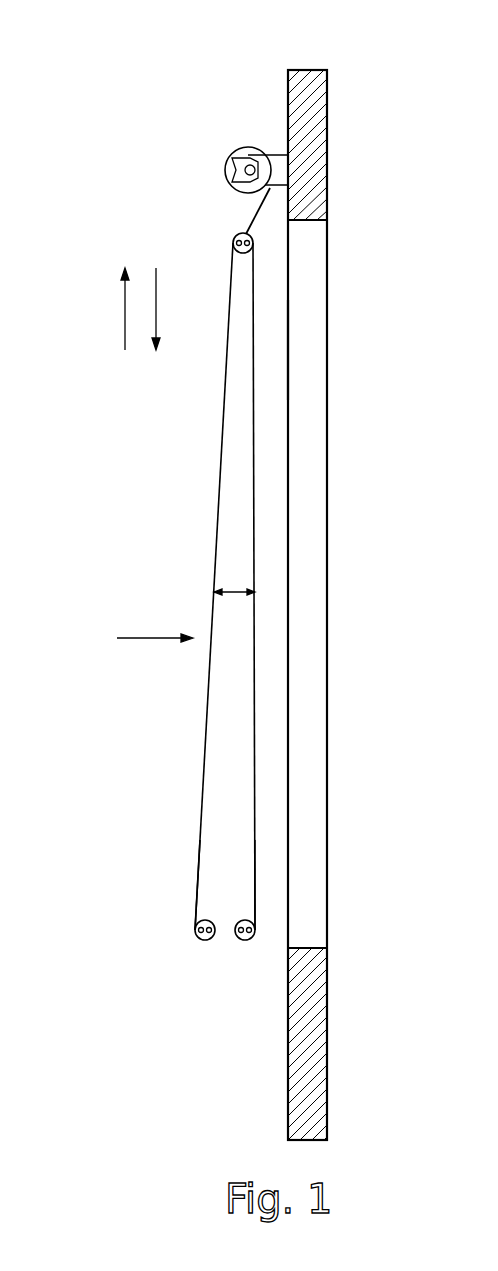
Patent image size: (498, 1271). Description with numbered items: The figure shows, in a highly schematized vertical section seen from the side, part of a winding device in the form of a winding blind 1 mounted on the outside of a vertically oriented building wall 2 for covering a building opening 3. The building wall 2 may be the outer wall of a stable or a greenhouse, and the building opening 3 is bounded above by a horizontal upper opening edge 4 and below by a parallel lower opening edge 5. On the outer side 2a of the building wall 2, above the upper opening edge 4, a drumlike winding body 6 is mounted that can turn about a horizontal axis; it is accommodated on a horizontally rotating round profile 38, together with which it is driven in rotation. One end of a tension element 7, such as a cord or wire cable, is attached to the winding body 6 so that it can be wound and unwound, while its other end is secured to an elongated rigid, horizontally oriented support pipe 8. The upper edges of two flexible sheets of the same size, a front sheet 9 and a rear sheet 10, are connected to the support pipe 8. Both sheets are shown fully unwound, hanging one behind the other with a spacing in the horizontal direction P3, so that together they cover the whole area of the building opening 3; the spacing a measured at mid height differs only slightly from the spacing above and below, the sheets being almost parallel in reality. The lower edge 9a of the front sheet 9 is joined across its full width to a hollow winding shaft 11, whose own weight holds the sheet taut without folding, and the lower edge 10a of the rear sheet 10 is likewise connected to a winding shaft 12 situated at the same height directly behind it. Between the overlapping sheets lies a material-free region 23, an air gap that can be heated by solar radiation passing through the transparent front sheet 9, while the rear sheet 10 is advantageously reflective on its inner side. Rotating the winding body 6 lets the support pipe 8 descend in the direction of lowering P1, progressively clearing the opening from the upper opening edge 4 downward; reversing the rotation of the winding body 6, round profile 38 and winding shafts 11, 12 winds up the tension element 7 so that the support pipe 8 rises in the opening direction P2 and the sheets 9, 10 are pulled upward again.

The winding blind 1 is at (208, 140).
The building wall 2 is at (331, 89).
The outer side of the building wall 2a is at (283, 85).
The building opening 3 is at (314, 345).
The upper opening edge 4 is at (315, 224).
The lower opening edge 5 is at (305, 947).
The winding body 6 is at (250, 147).
The tension element 7 is at (257, 213).
The support pipe 8 is at (233, 236).
The front sheet 9 is at (215, 560).
The lower edge of the sheet 9 9a is at (198, 905).
The rear sheet 10 is at (255, 533).
The lower edge of the sheet 10 10a is at (253, 922).
The winding shaft 11 is at (205, 941).
The winding shaft 12 is at (245, 941).
The material-free region 23 is at (242, 714).
The round profile 38 is at (297, 155).
The spacing a is at (234, 605).
The direction of lowering P1 is at (160, 320).
The opening direction P2 is at (122, 320).
The horizontal direction P3 is at (150, 642).